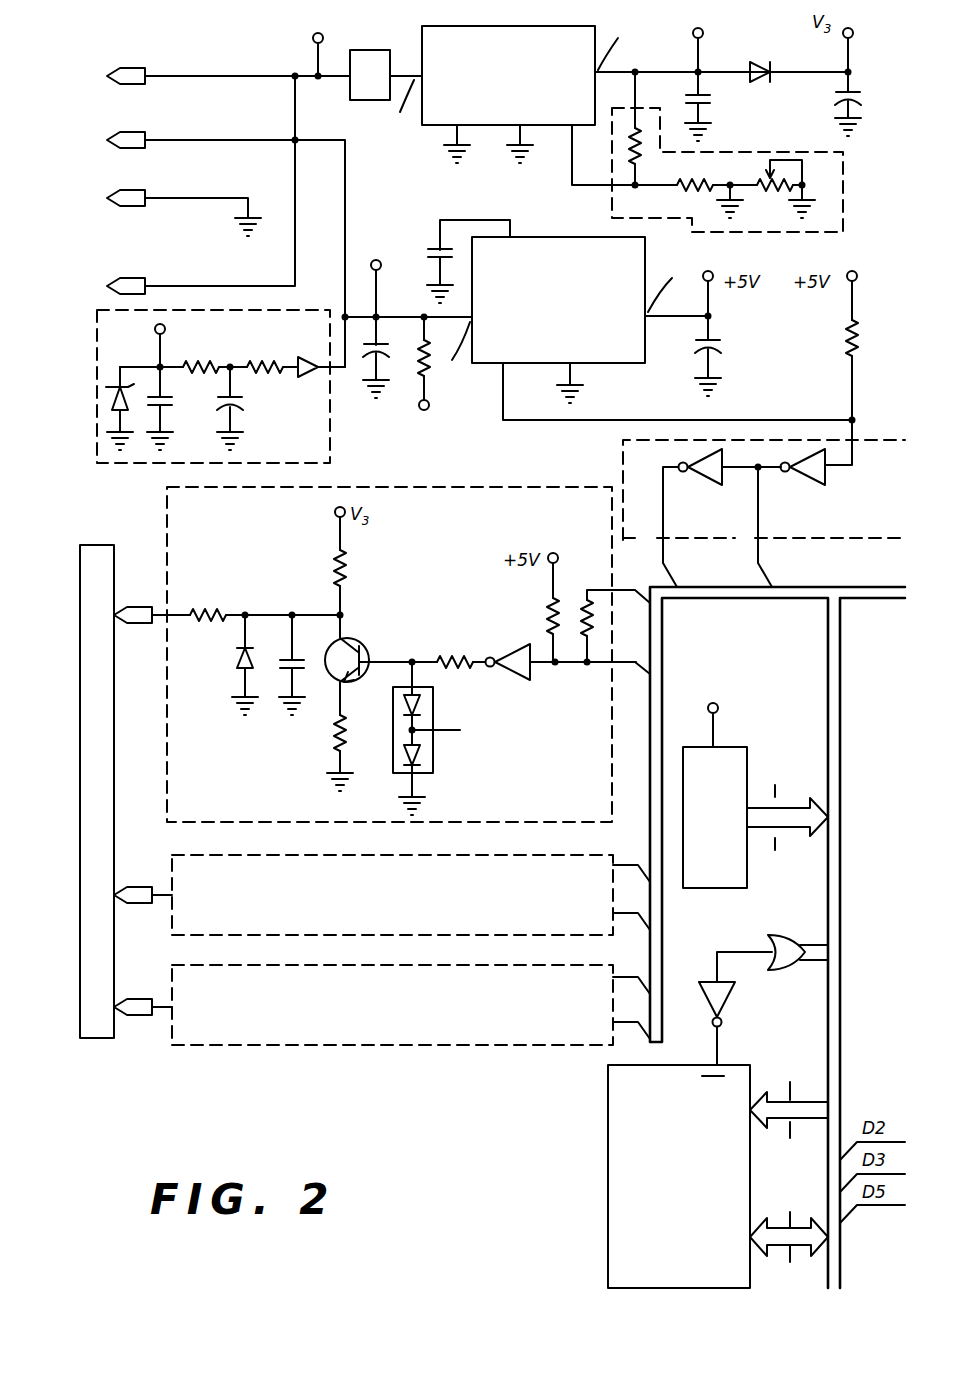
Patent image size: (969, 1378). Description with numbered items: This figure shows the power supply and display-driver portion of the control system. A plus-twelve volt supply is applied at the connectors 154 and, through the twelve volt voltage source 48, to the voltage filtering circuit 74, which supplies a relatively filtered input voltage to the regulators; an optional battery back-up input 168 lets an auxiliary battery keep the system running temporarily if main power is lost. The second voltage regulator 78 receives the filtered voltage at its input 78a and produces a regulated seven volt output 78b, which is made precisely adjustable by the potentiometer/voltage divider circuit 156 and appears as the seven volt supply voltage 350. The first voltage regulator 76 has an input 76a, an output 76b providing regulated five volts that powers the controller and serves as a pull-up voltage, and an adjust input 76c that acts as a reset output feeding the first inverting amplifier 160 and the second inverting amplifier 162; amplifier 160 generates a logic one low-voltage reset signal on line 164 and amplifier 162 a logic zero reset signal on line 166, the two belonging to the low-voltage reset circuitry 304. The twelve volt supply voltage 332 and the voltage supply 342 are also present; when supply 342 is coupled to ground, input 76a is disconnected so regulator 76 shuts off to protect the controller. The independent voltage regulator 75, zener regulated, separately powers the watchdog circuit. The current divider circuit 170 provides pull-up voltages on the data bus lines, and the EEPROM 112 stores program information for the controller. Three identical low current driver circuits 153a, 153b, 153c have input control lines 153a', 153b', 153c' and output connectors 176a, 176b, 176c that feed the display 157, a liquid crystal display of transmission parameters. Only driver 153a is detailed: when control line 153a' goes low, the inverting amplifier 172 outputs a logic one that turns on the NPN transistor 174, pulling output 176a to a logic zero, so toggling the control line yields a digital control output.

The connectors 154 is at (112, 78).
The battery back-up input 168 is at (118, 283).
The +12 volt voltage source 48 is at (323, 36).
The voltage filtering circuit 74 is at (358, 96).
The second voltage regulator 78 is at (497, 127).
The input 78a is at (394, 111).
The output 78b is at (620, 38).
The adjust input 76c is at (570, 130).
The 7.0 volt supply voltage 350 is at (703, 31).
The potentiometer/voltage divider circuit 156 is at (735, 152).
The +12 volt supply voltage 332 is at (380, 258).
The voltage supply 342 is at (428, 410).
The first voltage regulator 76 is at (558, 320).
The input 76a is at (458, 359).
The output 76b is at (676, 283).
The reset circuit 304 is at (881, 438).
The first inverting amplifier 160 is at (816, 478).
The second inverting amplifier 162 is at (712, 470).
The line 166 is at (665, 566).
The line 164 is at (760, 565).
The display 157 is at (100, 546).
The low current driver circuit 153a is at (389, 636).
The output connector 176a is at (137, 613).
The NPN transistor 174 is at (383, 644).
The inverting amplifier 172 is at (512, 668).
The input control line 153a' is at (584, 702).
The low current driver circuit 153b is at (392, 905).
The output connector 176b is at (137, 890).
The input control line 153b' is at (599, 933).
The low current driver circuit 153c is at (392, 1028).
The output connector 176c is at (142, 1012).
The input control line 153c' is at (585, 1024).
The current divider circuit 170 is at (755, 794).
The EEPROM 112 is at (718, 1178).
The voltage regulator 75 is at (333, 415).